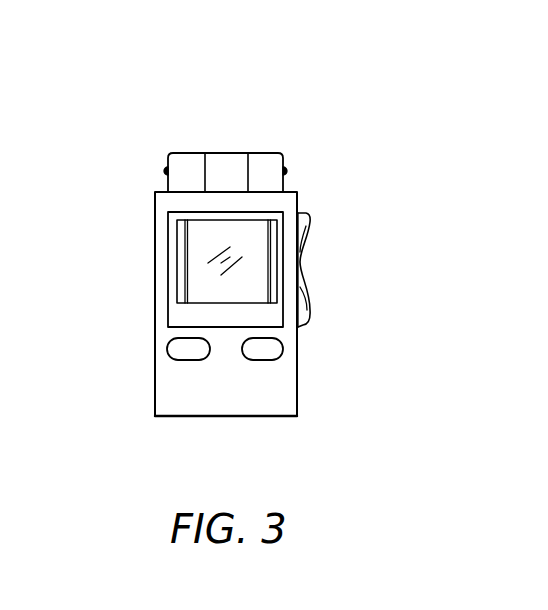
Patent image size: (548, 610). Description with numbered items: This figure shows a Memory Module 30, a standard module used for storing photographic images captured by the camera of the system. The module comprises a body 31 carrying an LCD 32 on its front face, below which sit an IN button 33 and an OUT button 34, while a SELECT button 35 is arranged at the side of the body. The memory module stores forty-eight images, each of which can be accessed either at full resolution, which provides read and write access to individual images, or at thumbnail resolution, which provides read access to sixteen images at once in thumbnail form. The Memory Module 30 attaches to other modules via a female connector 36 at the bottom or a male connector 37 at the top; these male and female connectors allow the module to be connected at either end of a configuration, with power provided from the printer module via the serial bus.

The Memory Module 30 is at (322, 127).
The body 31 is at (298, 395).
The LCD 32 is at (197, 255).
The IN button 33 is at (176, 350).
The OUT button 34 is at (274, 350).
The SELECT button 35 is at (310, 227).
The female connector 36 is at (178, 417).
The male connector 37 is at (167, 163).